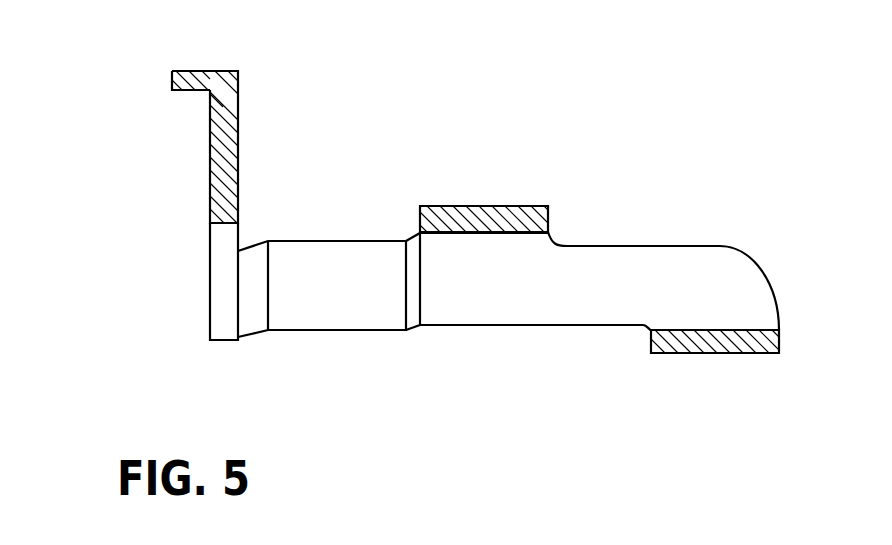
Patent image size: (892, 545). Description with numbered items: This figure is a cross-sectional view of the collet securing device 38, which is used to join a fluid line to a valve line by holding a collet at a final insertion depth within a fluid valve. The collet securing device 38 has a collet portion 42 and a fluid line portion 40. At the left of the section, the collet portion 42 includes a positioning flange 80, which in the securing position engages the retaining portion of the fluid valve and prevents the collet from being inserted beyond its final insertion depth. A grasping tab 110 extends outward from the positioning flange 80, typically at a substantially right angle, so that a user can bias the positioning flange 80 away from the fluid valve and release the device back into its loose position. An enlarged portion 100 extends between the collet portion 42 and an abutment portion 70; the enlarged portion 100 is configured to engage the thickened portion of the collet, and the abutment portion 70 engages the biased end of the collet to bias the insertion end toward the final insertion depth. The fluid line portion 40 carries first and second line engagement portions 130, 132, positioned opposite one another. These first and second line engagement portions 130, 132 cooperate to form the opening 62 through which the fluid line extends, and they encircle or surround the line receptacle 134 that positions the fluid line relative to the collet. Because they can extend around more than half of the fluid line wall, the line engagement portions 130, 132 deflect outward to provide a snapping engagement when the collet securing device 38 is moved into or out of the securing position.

The grasping tab 110 is at (187, 70).
The positioning flange 80 is at (210, 152).
The collet portion 42 is at (181, 280).
The enlarged portion 100 is at (310, 310).
The abutment portion 70 is at (418, 220).
The line receptacle 134 is at (445, 282).
The fluid line portion 40 is at (657, 209).
The second line engagement portion 132 is at (505, 205).
The collet securing device 38 is at (474, 173).
The opening 62 is at (655, 280).
The first line engagement portion 130 is at (687, 348).